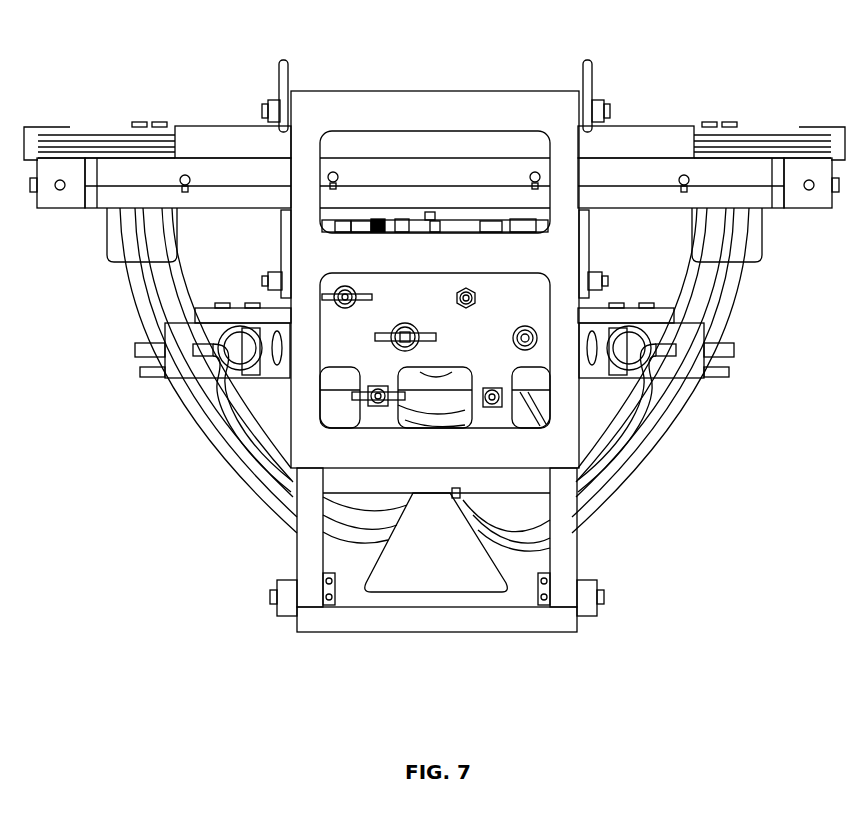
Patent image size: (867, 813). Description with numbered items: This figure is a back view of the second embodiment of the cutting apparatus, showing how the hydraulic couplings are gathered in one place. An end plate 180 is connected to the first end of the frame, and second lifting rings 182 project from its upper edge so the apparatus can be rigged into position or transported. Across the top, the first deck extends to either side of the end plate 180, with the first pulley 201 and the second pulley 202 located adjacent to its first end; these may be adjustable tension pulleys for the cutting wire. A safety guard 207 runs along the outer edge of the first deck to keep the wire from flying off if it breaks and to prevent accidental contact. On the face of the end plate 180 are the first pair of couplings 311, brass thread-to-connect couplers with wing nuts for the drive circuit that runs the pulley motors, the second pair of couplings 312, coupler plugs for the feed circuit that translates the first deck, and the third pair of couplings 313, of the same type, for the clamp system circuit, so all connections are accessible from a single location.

The end plate 180 is at (365, 105).
The second lifting rings 182 is at (283, 62).
The first pulley 201 is at (768, 132).
The second pulley 202 is at (83, 138).
The safety guard 207 is at (38, 125).
The first pair of couplings 311 is at (422, 345).
The second pair of couplings 312 is at (348, 293).
The third pair of couplings 313 is at (480, 402).